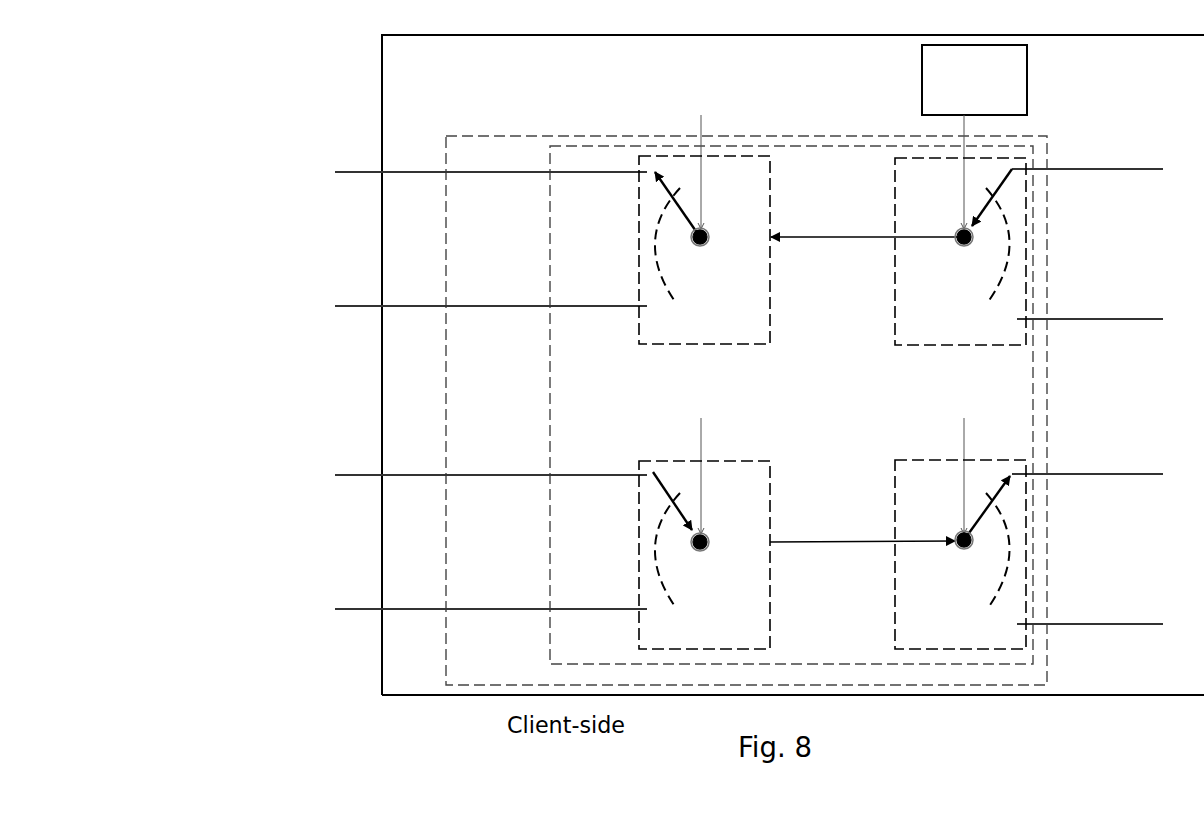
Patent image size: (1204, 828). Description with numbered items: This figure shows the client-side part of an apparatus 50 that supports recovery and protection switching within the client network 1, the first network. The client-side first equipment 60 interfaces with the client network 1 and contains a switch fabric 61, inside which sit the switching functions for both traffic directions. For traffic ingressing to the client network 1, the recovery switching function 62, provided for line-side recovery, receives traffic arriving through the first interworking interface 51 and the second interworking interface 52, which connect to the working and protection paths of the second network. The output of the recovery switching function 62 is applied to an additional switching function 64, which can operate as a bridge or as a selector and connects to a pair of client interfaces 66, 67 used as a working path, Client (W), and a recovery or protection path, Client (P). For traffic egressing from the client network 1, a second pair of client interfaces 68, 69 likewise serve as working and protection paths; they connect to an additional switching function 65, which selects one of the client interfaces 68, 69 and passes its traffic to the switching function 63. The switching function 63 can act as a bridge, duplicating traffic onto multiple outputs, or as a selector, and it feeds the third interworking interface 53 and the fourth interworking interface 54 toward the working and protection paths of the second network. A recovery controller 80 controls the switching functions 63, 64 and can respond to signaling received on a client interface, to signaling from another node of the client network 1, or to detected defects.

The first network 1 is at (230, 382).
The apparatus 50 is at (382, 78).
The first interworking interface 51 is at (1137, 169).
The second interworking interface 52 is at (1137, 319).
The third interworking interface 53 is at (1137, 474).
The fourth interworking interface 54 is at (1137, 624).
The first equipment 60 is at (470, 136).
The switch fabric 61 is at (662, 146).
The recovery switching function 62 is at (895, 203).
The switching function 63 is at (897, 508).
The additional switching function 64 is at (639, 242).
The additional switching function 65 is at (639, 547).
The client interface 66 is at (433, 172).
The client interface 67 is at (433, 306).
The client interface 68 is at (433, 475).
The client interface 69 is at (433, 609).
The recovery controller 80 is at (922, 80).